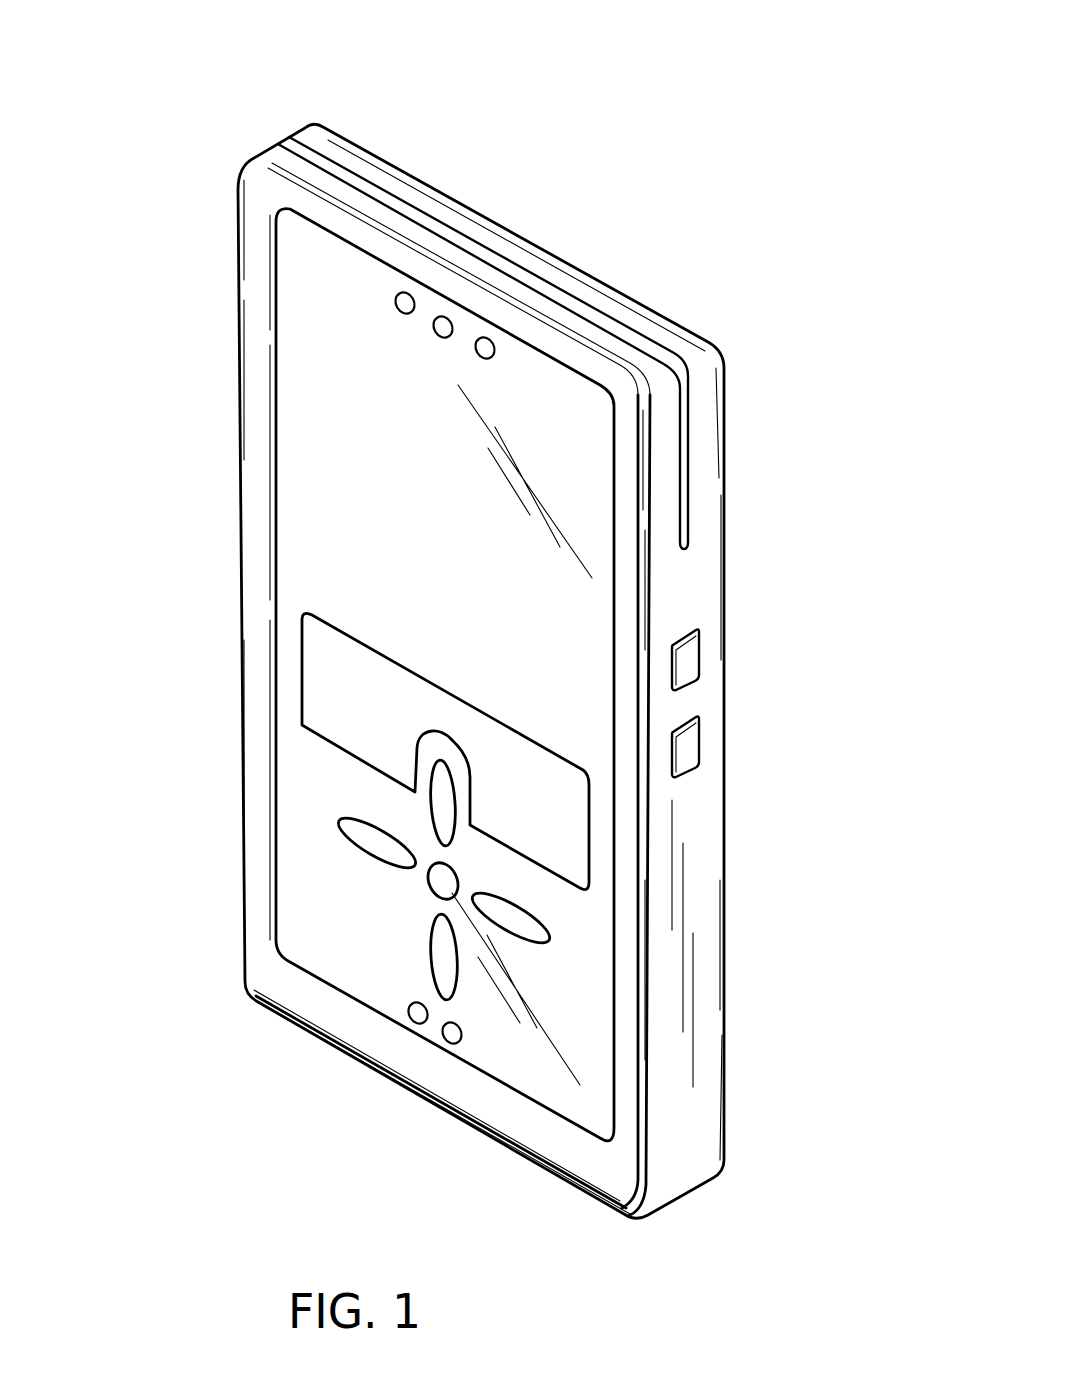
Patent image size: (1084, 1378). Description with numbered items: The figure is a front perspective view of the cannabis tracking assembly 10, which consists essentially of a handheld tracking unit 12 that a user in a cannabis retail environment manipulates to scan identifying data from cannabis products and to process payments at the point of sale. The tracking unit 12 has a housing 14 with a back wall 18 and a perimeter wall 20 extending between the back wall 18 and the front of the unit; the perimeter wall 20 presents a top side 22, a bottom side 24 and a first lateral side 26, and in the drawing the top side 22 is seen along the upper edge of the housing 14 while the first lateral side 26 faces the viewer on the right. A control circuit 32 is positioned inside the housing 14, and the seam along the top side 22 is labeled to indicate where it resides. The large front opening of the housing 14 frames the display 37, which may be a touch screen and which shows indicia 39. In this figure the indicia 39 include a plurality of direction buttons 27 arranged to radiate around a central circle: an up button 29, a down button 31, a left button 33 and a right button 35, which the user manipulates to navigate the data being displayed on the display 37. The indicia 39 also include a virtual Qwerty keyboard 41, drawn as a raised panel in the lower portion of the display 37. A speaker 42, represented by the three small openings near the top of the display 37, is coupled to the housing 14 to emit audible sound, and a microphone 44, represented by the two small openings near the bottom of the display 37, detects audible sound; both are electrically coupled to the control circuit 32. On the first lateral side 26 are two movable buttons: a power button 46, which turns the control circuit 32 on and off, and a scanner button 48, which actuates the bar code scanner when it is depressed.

The cannabis tracking assembly 10 is at (773, 110).
The tracking unit 12 is at (752, 350).
The housing 14 is at (315, 124).
The back wall 18 is at (257, 337).
The perimeter wall 20 is at (697, 588).
The top side 22 is at (378, 177).
The bottom side 24 is at (570, 1188).
The first lateral side 26 is at (693, 843).
The direction buttons 27 is at (372, 867).
The up button 29 is at (458, 887).
The down button 31 is at (455, 970).
The control circuit 32 is at (557, 298).
The left button 33 is at (487, 922).
The right button 35 is at (548, 941).
The display 37 is at (273, 765).
The indicia 39 is at (322, 823).
The virtual Qwerty keyboard 41 is at (312, 610).
The speaker 42 is at (487, 340).
The microphone 44 is at (452, 1046).
The power button 46 is at (687, 655).
The scanner button 48 is at (685, 742).